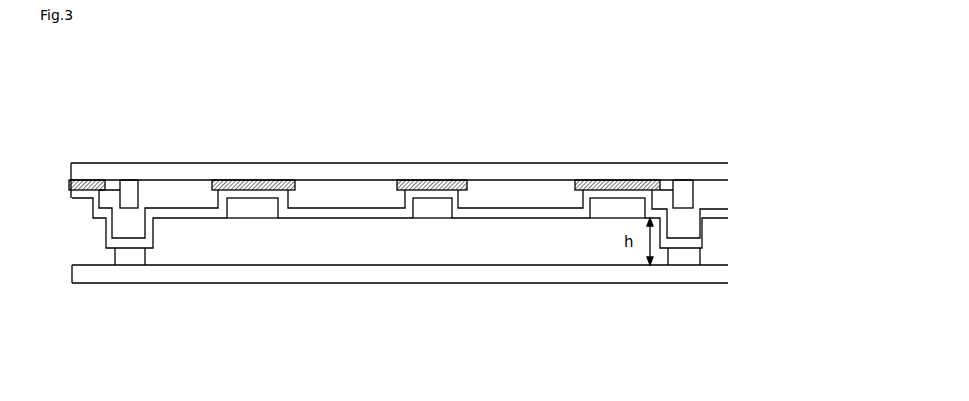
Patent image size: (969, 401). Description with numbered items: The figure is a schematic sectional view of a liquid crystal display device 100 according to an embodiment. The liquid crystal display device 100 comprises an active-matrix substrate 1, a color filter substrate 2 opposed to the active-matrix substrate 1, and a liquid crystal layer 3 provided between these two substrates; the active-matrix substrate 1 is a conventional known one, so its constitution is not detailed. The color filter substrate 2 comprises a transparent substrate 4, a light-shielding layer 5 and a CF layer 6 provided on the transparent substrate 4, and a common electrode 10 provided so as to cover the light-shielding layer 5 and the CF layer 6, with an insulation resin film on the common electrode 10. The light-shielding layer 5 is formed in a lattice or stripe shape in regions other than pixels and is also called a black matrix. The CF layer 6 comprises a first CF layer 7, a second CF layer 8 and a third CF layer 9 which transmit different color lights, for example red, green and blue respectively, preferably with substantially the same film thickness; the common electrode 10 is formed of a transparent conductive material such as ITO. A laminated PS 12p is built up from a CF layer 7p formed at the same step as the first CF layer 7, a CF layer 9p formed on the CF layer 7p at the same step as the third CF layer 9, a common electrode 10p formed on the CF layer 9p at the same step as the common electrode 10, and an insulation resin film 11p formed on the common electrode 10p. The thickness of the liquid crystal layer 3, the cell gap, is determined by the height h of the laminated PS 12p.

The liquid crystal display device 100 is at (601, 112).
The active-matrix substrate 1 is at (67, 265).
The color filter substrate 2 is at (67, 163).
The liquid crystal layer 3 is at (256, 253).
The transparent substrate 4 is at (338, 172).
The light-shielding layer 5 is at (243, 180).
The CF layer 6 is at (425, 332).
The first CF layer 7 is at (470, 203).
The second CF layer 8 is at (337, 198).
The third CF layer 9 is at (208, 199).
The common electrode 10 is at (502, 213).
The CF layer of laminated PS 7p is at (130, 186).
The CF layer of laminated PS 9p is at (128, 228).
The common electrode of laminated PS 10p is at (124, 241).
The insulation resin film of laminated PS 11p is at (133, 256).
The laminated PS 12p is at (790, 176).